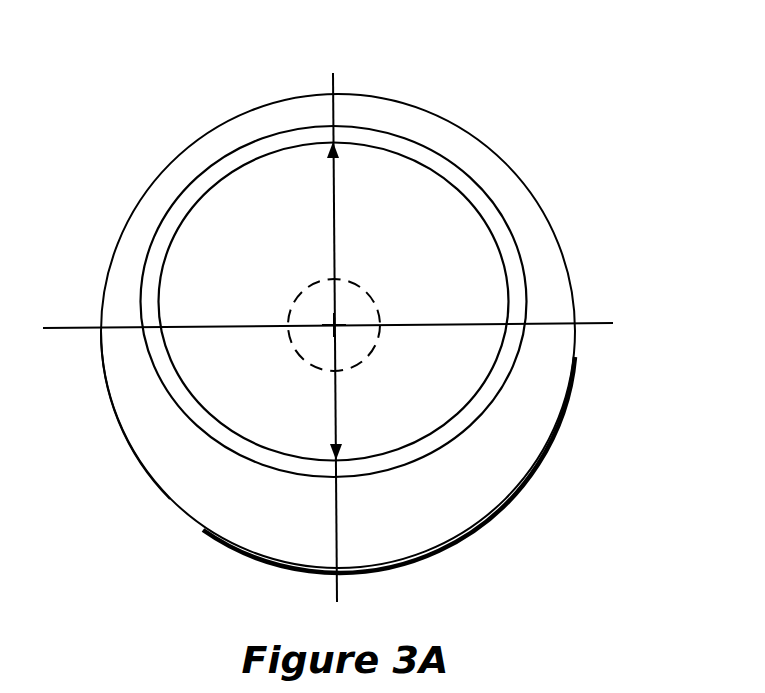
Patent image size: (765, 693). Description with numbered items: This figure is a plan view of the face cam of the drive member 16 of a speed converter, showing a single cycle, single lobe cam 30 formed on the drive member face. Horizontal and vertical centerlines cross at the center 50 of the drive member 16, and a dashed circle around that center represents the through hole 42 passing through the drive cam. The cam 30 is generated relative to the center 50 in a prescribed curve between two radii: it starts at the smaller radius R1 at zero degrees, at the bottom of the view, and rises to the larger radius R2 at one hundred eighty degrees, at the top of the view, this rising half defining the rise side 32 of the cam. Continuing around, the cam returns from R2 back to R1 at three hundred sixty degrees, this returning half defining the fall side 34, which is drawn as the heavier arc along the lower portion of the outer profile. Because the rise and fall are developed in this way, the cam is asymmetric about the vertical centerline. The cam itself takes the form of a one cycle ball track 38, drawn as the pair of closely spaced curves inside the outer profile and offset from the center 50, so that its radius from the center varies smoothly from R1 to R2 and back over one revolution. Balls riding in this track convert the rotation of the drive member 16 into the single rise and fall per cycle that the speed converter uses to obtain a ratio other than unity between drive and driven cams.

The drive member 16 is at (140, 157).
The single cycle cam 30 is at (207, 492).
The rise side 32 is at (155, 433).
The fall side 34 is at (500, 482).
The one cycle ball track 38 is at (492, 220).
The through hole 42 is at (365, 290).
The center 50 is at (334, 325).
The minimum cam radius R1 is at (337, 422).
The maximum cam radius R2 is at (334, 217).